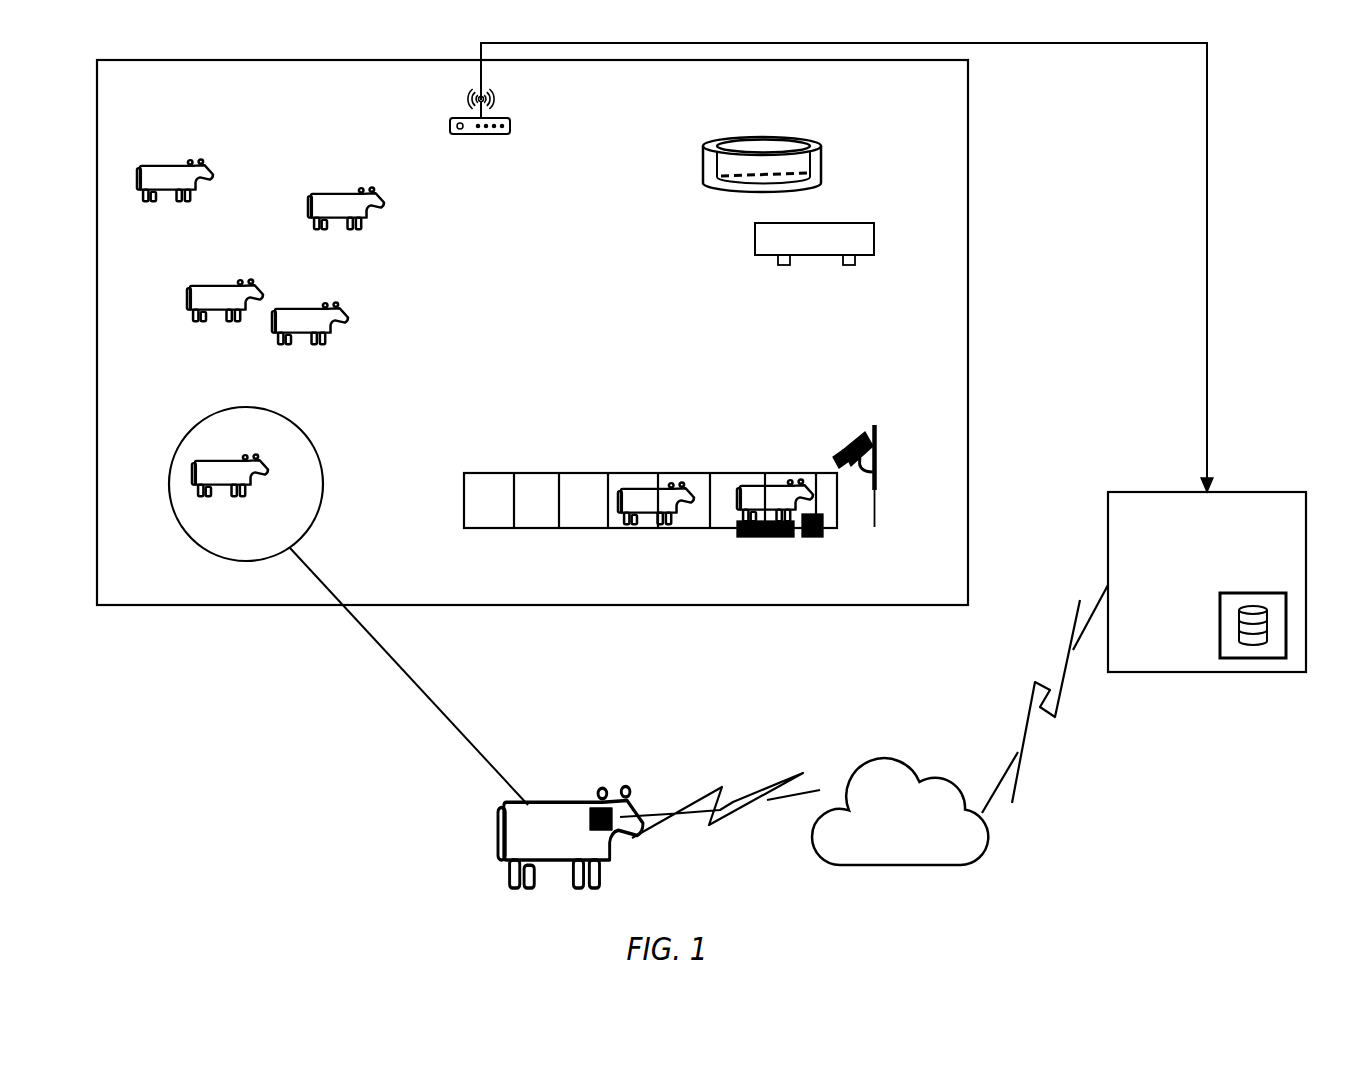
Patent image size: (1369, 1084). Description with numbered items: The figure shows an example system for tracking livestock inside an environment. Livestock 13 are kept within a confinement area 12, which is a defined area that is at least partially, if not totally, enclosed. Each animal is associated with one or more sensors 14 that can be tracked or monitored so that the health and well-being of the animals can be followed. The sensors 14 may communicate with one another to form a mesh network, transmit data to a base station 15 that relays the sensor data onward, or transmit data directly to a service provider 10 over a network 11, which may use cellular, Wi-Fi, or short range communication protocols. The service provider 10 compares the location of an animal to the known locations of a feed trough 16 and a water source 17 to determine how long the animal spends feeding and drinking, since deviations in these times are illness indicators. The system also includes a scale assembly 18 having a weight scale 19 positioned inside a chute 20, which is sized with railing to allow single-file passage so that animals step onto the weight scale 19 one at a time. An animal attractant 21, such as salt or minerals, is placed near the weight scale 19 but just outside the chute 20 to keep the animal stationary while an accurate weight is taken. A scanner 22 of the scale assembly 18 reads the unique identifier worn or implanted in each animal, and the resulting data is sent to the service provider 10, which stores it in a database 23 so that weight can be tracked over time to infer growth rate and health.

The service provider 10 is at (1207, 582).
The network 11 is at (900, 811).
The confinement area 12 is at (969, 272).
The livestock 13 is at (311, 127).
The sensors 14 is at (598, 810).
The base station 15 is at (483, 135).
The feed trough 16 is at (820, 147).
The water source 17 is at (863, 221).
The scale assembly 18 is at (755, 370).
The weight scale 19 is at (750, 535).
The chute 20 is at (647, 475).
The animal attractant 21 is at (810, 537).
The scanner 22 is at (886, 396).
The database 23 is at (1235, 632).